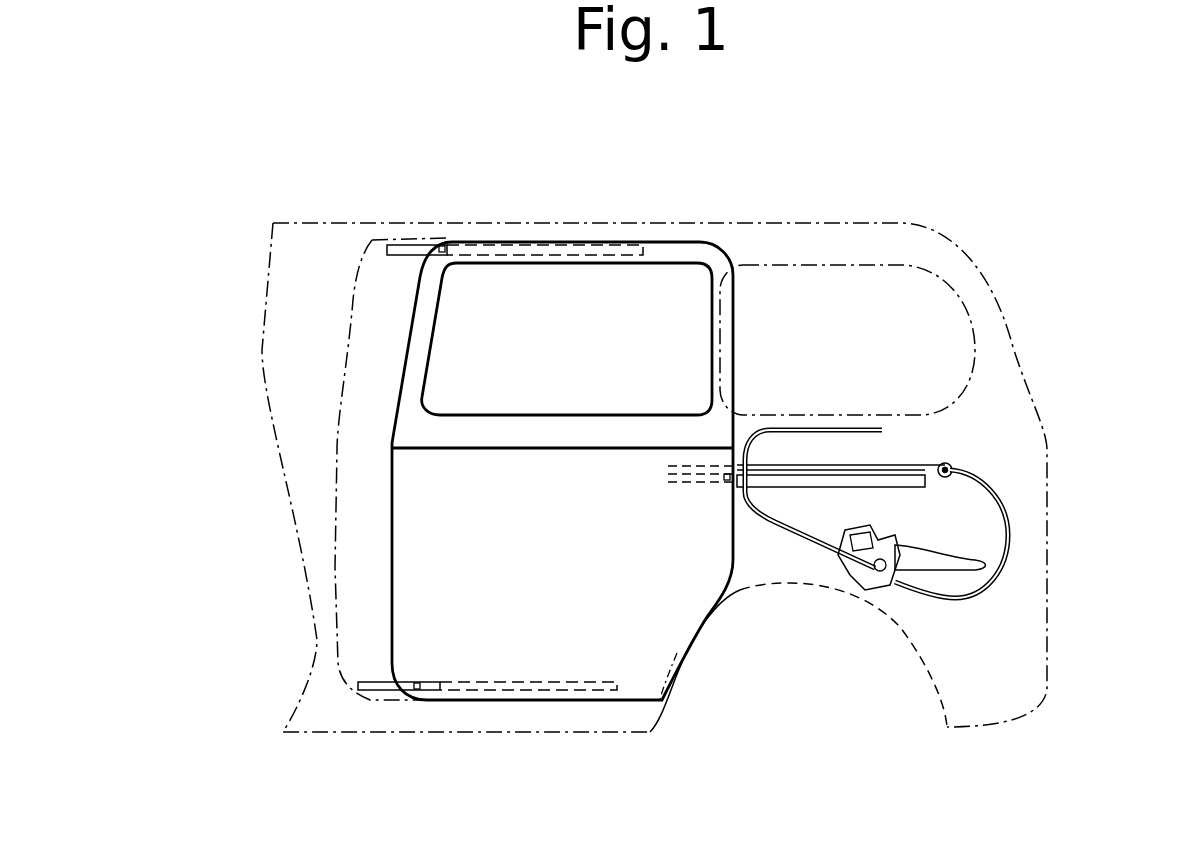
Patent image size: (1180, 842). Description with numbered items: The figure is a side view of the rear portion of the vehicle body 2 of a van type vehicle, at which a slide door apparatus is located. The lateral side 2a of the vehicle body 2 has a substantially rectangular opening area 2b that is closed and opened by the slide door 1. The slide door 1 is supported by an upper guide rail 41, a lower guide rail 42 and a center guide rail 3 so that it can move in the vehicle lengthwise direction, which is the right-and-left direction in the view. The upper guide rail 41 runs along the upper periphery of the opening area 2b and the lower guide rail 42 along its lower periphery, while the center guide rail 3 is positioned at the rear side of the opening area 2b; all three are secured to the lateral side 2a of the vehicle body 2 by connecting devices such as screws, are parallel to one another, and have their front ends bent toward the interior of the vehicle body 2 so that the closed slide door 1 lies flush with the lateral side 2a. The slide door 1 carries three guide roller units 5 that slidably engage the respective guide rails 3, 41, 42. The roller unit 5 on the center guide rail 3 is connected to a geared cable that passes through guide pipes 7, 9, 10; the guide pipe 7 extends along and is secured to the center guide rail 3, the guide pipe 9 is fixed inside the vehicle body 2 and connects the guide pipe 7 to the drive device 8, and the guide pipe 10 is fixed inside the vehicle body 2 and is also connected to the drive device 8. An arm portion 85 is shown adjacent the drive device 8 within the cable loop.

The slide door 1 is at (420, 560).
The vehicle body 2 is at (490, 218).
The lateral side 2a is at (973, 305).
The opening area 2b is at (338, 455).
The center guide rail 3 is at (777, 490).
The upper guide rail 41 is at (400, 250).
The lower guide rail 42 is at (380, 690).
The guide roller unit 5 is at (441, 248).
The guide pipe 7 is at (903, 463).
The drive device 8 is at (868, 580).
The arm bracket 85 is at (937, 558).
The guide pipe 9 is at (965, 598).
The guide pipe 10 is at (822, 430).